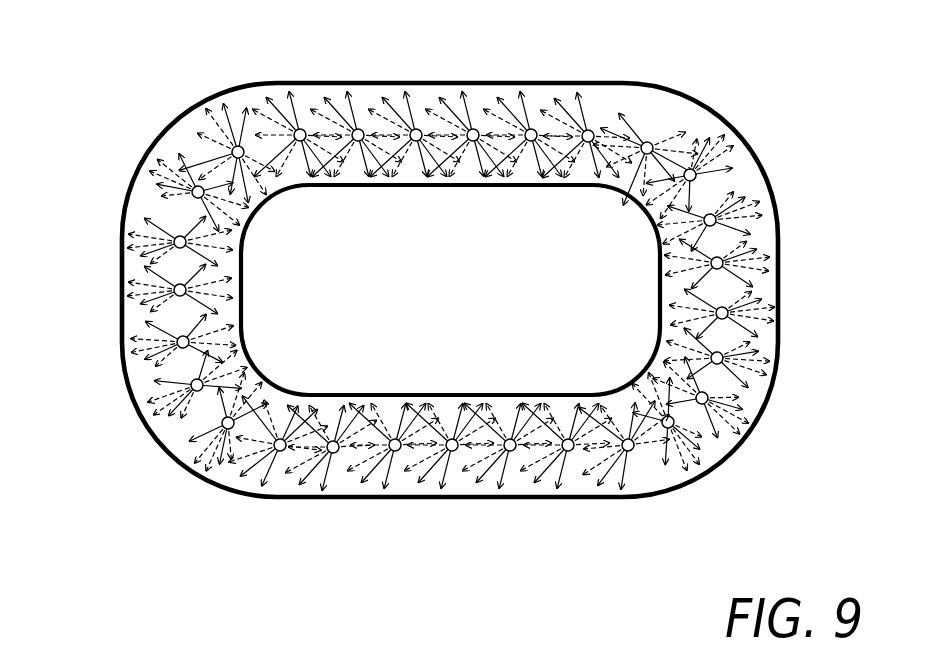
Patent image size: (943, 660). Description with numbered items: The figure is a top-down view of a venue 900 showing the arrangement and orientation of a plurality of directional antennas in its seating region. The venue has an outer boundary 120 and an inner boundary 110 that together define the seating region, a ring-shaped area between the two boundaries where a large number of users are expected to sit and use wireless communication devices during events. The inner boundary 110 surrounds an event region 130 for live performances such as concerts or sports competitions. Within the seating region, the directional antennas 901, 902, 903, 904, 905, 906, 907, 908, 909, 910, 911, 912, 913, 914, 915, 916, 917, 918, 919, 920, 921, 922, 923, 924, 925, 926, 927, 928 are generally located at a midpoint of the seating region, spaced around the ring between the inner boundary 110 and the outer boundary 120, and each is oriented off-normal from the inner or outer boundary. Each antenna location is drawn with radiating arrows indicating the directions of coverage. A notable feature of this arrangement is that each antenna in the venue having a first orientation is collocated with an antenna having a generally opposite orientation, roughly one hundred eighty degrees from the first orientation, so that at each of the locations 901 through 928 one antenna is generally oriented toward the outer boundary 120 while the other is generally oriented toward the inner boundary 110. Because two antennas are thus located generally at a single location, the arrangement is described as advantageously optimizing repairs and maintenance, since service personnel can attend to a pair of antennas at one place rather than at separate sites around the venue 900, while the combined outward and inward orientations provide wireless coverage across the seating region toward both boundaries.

The venue 900 is at (85, 74).
The inner boundary 110 is at (250, 230).
The outer boundary 120 is at (753, 157).
The event region 130 is at (468, 283).
The directional antenna 901 is at (300, 128).
The directional antenna 902 is at (358, 128).
The directional antenna 903 is at (416, 128).
The directional antenna 904 is at (473, 128).
The directional antenna 905 is at (531, 128).
The directional antenna 906 is at (588, 130).
The directional antenna 907 is at (647, 142).
The directional antenna 908 is at (690, 170).
The directional antenna 909 is at (716, 218).
The directional antenna 910 is at (723, 263).
The directional antenna 911 is at (728, 313).
The directional antenna 912 is at (723, 358).
The directional antenna 913 is at (707, 401).
The directional antenna 914 is at (672, 428).
The directional antenna 915 is at (628, 451).
The directional antenna 916 is at (568, 451).
The directional antenna 917 is at (510, 451).
The directional antenna 918 is at (452, 451).
The directional antenna 919 is at (395, 451).
The directional antenna 920 is at (333, 454).
The directional antenna 921 is at (280, 451).
The directional antenna 922 is at (224, 428).
The directional antenna 923 is at (192, 388).
The directional antenna 924 is at (177, 343).
The directional antenna 925 is at (174, 291).
The directional antenna 926 is at (174, 242).
The directional antenna 927 is at (192, 189).
The directional antenna 928 is at (233, 148).